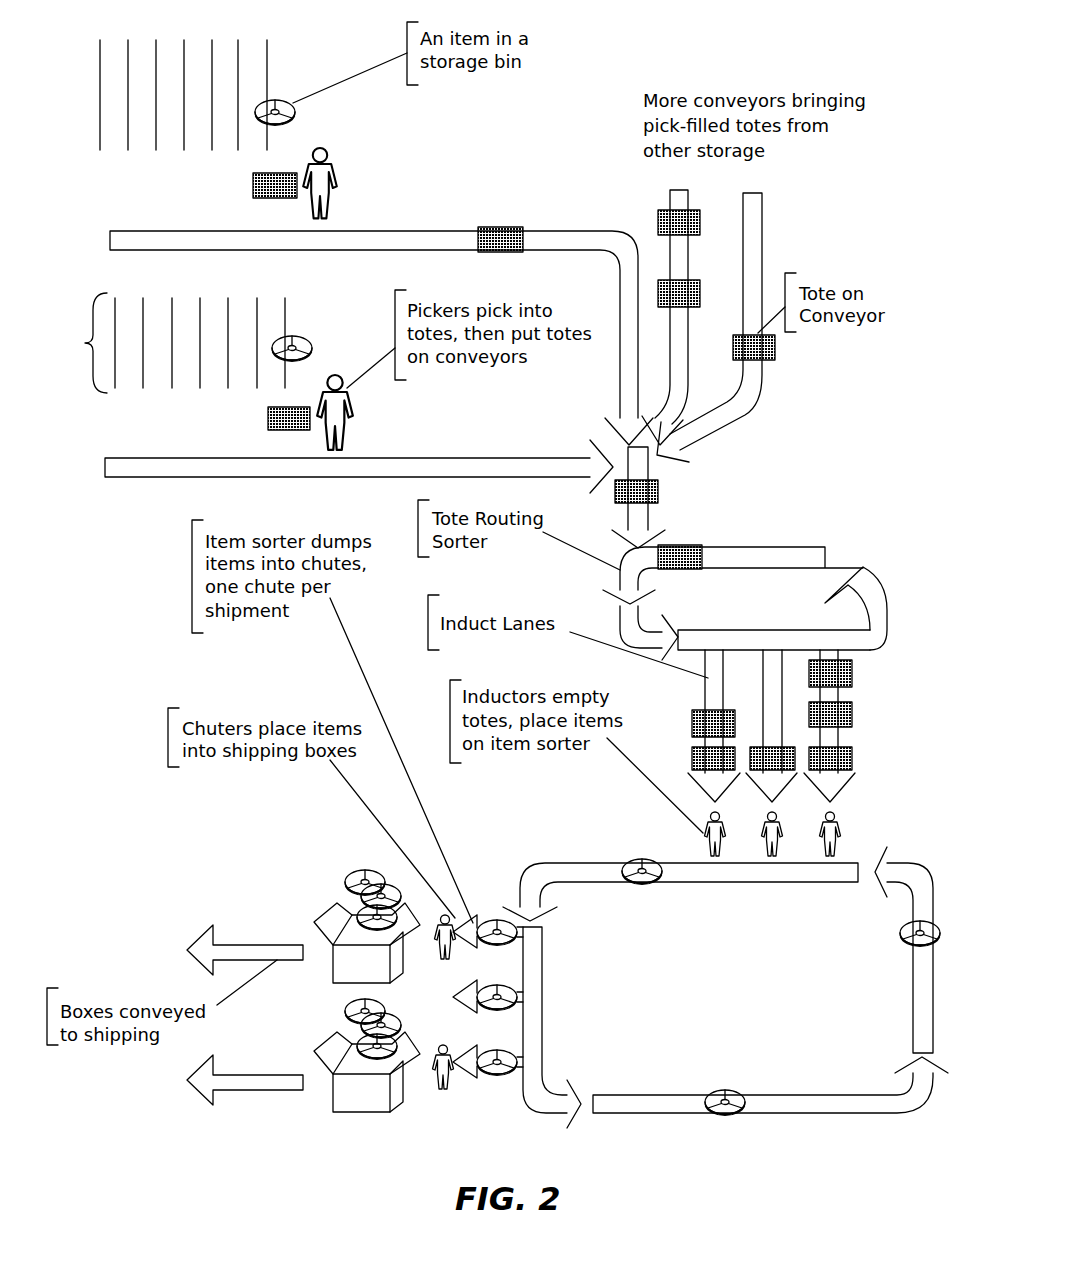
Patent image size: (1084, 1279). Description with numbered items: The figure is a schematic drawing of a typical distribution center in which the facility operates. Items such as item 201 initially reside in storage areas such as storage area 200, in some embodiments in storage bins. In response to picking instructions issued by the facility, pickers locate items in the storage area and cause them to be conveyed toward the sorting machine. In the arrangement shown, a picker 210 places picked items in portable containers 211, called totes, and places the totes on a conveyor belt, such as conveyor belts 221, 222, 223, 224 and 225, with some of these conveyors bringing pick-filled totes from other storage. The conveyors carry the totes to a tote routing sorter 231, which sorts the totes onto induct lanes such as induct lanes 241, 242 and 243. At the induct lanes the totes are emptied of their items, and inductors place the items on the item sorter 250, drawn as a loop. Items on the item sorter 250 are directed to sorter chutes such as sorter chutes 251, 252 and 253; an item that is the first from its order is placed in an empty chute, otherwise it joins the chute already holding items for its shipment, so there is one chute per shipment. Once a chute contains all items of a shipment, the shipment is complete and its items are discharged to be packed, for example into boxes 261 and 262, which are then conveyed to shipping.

The storage area 200 is at (163, 343).
The item 201 is at (297, 337).
The picker 210 is at (350, 412).
The portable container 211 is at (267, 410).
The conveyor belt 221 is at (363, 477).
The conveyor belt 222 is at (542, 228).
The conveyor belt 223 is at (688, 207).
The conveyor belt 224 is at (762, 233).
The conveyor belt 225 is at (647, 523).
The tote routing sorter 231 is at (860, 583).
The induct lane 241 is at (705, 700).
The induct lane 242 is at (765, 702).
The induct lane 243 is at (842, 690).
The item sorter 250 is at (805, 1113).
The sorter chute 251 is at (483, 950).
The sorter chute 252 is at (483, 1007).
The sorter chute 253 is at (487, 1080).
The box 261 is at (333, 975).
The box 262 is at (335, 1105).